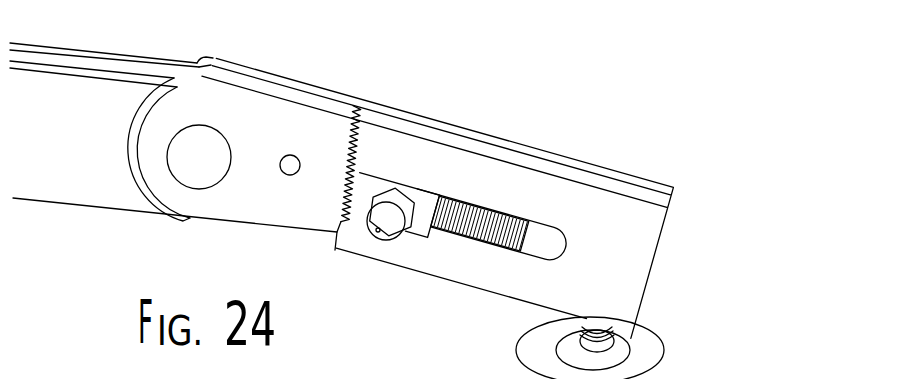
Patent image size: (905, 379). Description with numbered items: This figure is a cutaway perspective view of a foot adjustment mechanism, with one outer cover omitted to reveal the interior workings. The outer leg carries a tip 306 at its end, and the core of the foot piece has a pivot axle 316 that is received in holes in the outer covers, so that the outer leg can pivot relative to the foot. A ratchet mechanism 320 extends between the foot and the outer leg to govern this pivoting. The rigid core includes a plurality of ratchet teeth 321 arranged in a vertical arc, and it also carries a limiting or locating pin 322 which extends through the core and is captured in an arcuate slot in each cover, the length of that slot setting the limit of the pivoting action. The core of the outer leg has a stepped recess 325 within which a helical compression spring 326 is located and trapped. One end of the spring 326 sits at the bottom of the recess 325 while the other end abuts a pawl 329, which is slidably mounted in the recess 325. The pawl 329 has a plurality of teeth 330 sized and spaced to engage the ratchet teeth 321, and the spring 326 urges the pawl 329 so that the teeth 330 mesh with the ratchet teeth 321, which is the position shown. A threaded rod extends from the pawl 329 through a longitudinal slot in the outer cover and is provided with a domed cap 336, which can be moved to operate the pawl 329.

The tip 306 is at (662, 357).
The pivot axle 316 is at (182, 160).
The ratchet mechanism 320 is at (365, 88).
The ratchet teeth 321 is at (348, 153).
The locating pin 322 is at (283, 158).
The stepped recess 325 is at (482, 240).
The helical compression spring 326 is at (480, 218).
The pawl 329 is at (370, 190).
The teeth 330 is at (361, 210).
The domed cap 336 is at (393, 232).